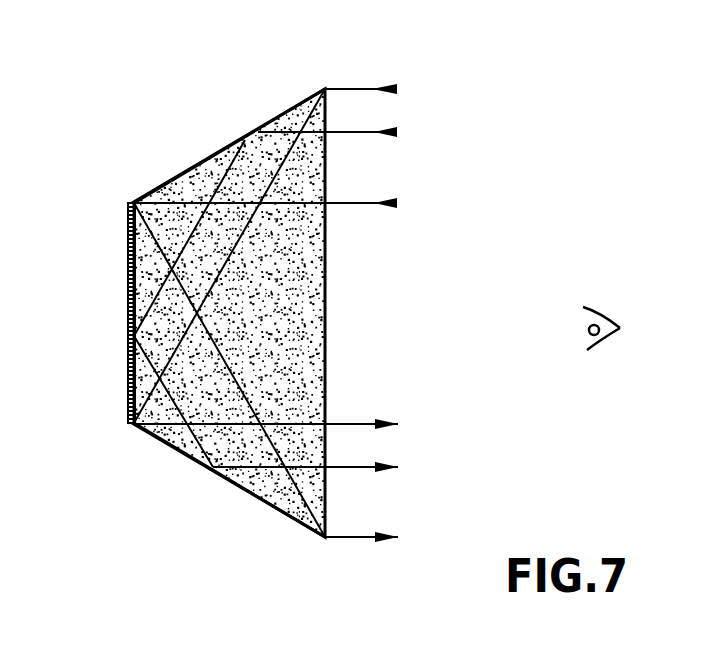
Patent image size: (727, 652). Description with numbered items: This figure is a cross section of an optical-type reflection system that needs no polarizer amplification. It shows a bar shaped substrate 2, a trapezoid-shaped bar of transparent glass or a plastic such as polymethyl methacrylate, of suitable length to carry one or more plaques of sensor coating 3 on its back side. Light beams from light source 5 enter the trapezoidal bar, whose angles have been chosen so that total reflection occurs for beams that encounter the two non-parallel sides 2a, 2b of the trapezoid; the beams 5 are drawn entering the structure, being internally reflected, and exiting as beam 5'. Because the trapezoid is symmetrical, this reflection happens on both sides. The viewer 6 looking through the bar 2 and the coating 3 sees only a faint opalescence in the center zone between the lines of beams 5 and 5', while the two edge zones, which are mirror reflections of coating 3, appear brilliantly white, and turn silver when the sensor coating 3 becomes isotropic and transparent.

The bar shaped substrate 2 is at (216, 478).
The non-parallel side of the trapezoid 2a is at (305, 97).
The non-parallel side of the trapezoid 2b is at (306, 540).
The sensor coating 3 is at (124, 290).
The light beams from light source 5 is at (305, 146).
The exiting beam 5' is at (303, 480).
The viewer 6 is at (600, 307).